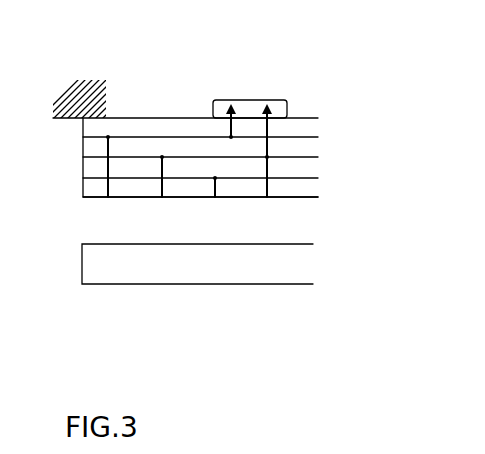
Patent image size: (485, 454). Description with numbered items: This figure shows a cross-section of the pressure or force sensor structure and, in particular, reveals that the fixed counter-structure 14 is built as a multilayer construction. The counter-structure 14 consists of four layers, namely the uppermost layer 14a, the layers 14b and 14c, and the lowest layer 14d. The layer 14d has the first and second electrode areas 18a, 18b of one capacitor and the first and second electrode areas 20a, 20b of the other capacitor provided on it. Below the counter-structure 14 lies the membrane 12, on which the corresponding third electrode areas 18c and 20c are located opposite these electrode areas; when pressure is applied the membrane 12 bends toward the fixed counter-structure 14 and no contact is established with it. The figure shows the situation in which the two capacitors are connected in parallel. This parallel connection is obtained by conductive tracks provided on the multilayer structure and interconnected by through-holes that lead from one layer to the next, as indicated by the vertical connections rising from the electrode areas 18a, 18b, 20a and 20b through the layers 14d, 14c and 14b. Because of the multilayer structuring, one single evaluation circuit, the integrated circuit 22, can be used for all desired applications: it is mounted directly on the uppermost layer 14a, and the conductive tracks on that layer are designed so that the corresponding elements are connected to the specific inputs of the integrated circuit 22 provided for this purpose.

The membrane 12 is at (82, 263).
The counter-structure 14 is at (205, 157).
The uppermost layer 14a is at (310, 125).
The layer 14b is at (310, 146).
The layer 14c is at (310, 168).
The layer 14d is at (310, 189).
The first electrode area 18a is at (97, 199).
The second electrode area 18b is at (172, 199).
The third electrode area 18c is at (130, 245).
The first electrode area 20a is at (208, 199).
The second electrode area 20b is at (280, 199).
The third electrode area 20c is at (222, 245).
The integrated circuit 22 is at (272, 100).